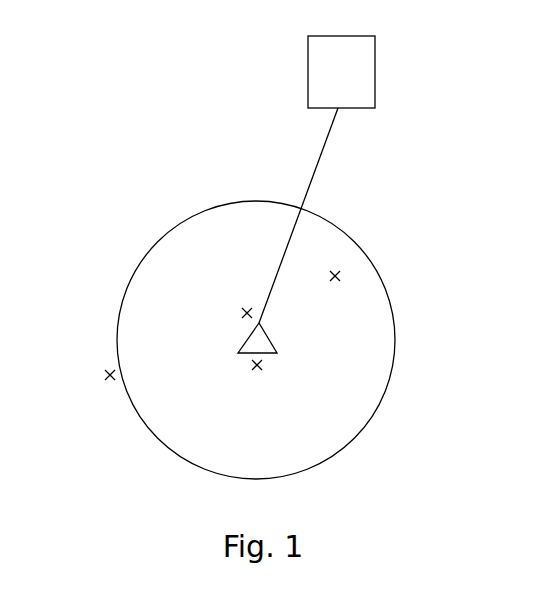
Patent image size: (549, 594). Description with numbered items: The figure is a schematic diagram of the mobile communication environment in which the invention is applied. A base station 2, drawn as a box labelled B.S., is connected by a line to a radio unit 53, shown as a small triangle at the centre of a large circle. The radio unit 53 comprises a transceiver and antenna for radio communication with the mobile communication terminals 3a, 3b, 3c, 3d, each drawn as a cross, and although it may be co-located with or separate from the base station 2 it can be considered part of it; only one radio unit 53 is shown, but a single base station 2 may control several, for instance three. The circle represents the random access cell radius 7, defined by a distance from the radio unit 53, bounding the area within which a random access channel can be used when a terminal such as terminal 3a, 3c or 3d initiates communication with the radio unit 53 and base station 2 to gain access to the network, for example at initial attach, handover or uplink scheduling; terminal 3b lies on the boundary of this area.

The base station 2 is at (317, 179).
The random access cell radius 7 is at (373, 415).
The radio unit 53 is at (263, 340).
The mobile communication terminal 3a is at (238, 312).
The mobile communication terminal 3b is at (100, 375).
The mobile communication terminal 3c is at (344, 273).
The mobile communication terminal 3d is at (266, 363).